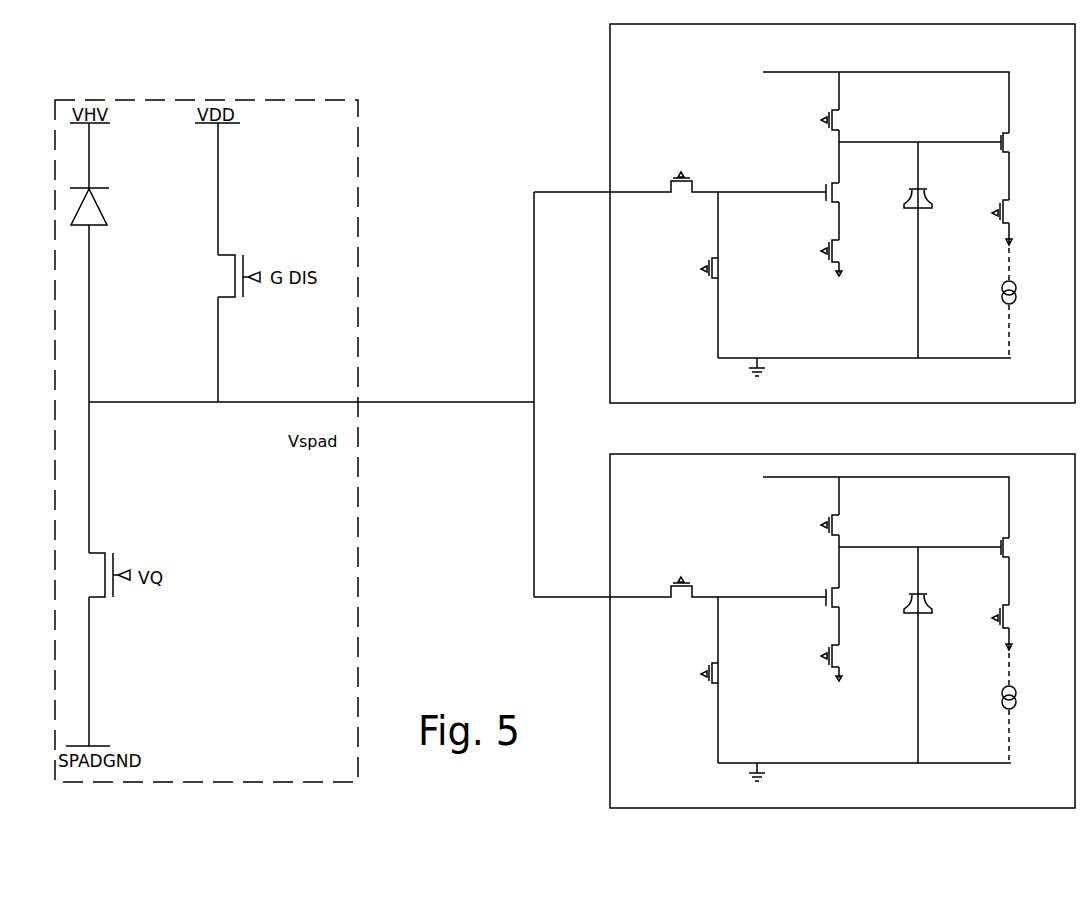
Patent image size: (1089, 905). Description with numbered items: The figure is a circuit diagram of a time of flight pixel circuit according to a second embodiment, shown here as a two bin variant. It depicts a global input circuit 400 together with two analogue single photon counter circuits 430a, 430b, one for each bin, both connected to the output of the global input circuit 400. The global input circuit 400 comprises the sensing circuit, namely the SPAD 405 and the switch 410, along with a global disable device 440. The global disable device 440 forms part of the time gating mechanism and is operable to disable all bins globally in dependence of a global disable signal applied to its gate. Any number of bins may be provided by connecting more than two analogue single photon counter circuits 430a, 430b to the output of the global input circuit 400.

The global input circuit 400 is at (206, 441).
The SPAD 405 is at (102, 221).
The switch 410 is at (101, 575).
The global disable device 440 is at (239, 263).
The analogue single photon counter circuit 430a is at (842, 213).
The analogue single photon counter circuit 430b is at (842, 631).